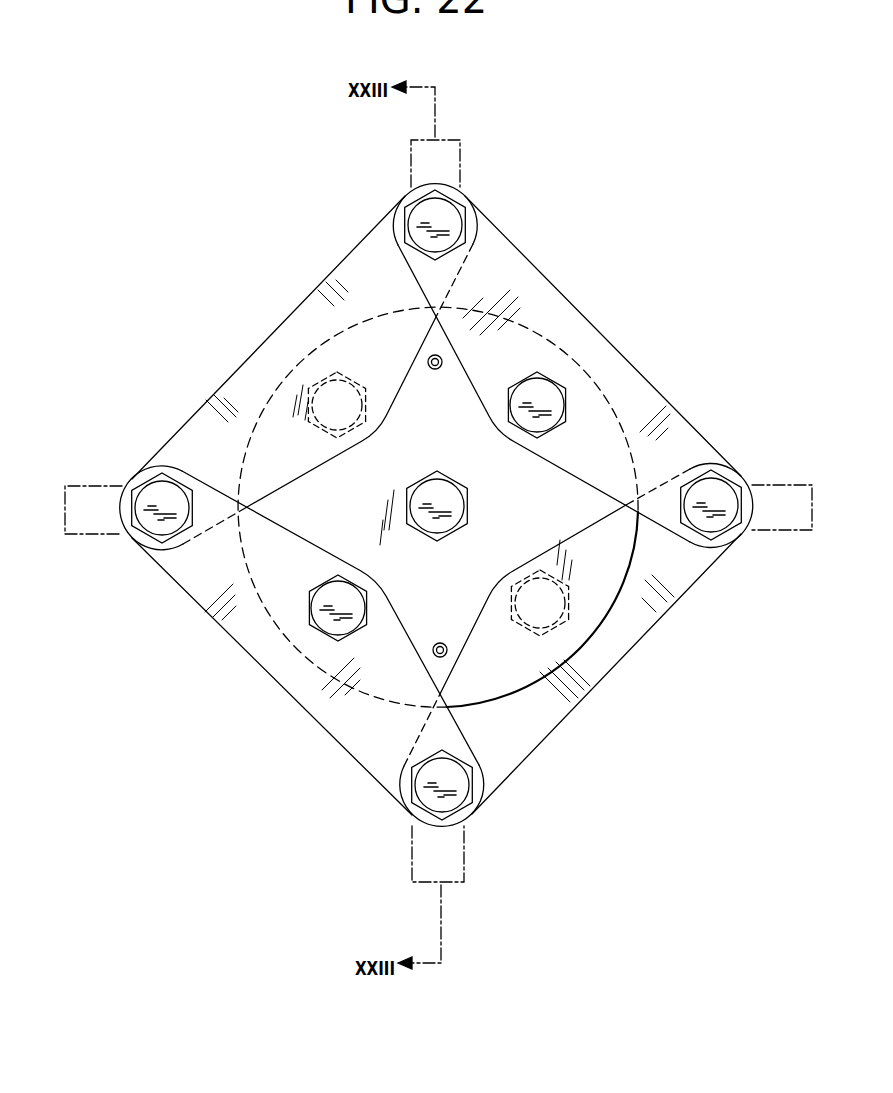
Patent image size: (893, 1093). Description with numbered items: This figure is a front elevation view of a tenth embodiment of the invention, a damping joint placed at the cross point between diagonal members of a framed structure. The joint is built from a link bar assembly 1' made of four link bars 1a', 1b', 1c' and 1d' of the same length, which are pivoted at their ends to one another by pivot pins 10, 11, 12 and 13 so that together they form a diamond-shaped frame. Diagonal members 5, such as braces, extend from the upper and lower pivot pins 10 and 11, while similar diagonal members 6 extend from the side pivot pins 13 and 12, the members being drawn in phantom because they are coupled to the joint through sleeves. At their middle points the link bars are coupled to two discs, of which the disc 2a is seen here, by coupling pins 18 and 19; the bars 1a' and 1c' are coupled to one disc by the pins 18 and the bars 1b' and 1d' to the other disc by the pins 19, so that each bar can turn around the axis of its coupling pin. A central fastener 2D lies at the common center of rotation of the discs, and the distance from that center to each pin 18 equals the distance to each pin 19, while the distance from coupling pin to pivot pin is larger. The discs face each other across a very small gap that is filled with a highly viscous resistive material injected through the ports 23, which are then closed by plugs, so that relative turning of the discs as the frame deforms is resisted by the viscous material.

The link bar assembly 1' is at (436, 505).
The link bar 1a' is at (573, 366).
The link bar 1b' is at (296, 373).
The link bar 1c' is at (308, 648).
The link bar 1d' is at (572, 641).
The disc 2a is at (407, 470).
The central bolt 2D is at (447, 496).
The diagonal member 5 is at (452, 156).
The diagonal member 6 is at (105, 487).
The pivot pin 10 is at (452, 227).
The pivot pin 11 is at (455, 770).
The pivot pin 12 is at (722, 498).
The pivot pin 13 is at (153, 530).
The coupling pin 18 is at (525, 392).
The coupling pin 19 is at (346, 395).
The port 23 is at (435, 370).